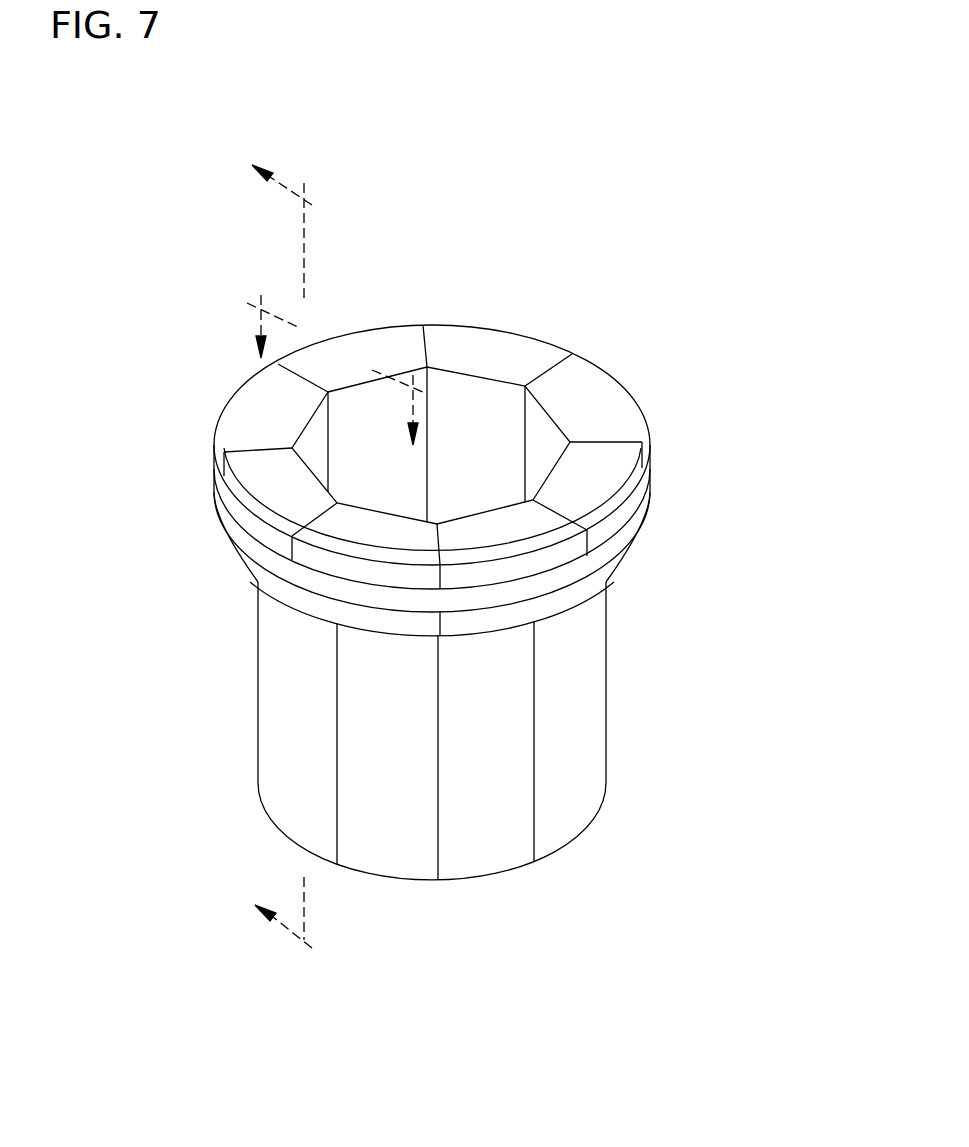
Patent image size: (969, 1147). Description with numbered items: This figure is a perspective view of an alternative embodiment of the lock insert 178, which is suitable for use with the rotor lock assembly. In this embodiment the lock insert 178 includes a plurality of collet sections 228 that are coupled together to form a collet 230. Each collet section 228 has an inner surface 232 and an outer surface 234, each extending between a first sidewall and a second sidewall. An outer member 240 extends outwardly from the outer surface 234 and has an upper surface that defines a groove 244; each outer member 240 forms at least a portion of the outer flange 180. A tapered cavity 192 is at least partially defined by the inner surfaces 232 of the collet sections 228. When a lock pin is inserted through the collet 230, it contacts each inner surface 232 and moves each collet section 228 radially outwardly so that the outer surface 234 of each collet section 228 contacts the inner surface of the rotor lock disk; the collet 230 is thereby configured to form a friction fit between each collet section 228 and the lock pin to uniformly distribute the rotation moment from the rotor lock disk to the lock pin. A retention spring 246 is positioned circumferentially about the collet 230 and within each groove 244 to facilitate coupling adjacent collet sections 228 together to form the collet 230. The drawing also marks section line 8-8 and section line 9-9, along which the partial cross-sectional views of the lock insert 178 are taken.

The lock insert 178 is at (140, 681).
The outer flange 180 is at (167, 501).
The tapered cavity 192 is at (453, 391).
The collet section 228 is at (382, 347).
The collet 230 is at (443, 498).
The inner surface 232 is at (502, 400).
The outer surface 234 is at (577, 660).
The outer member 240 is at (600, 373).
The groove 244 is at (680, 487).
The retention spring 246 is at (610, 545).
The section line 8- 8 is at (341, 360).
The section line 9- 9 is at (288, 566).